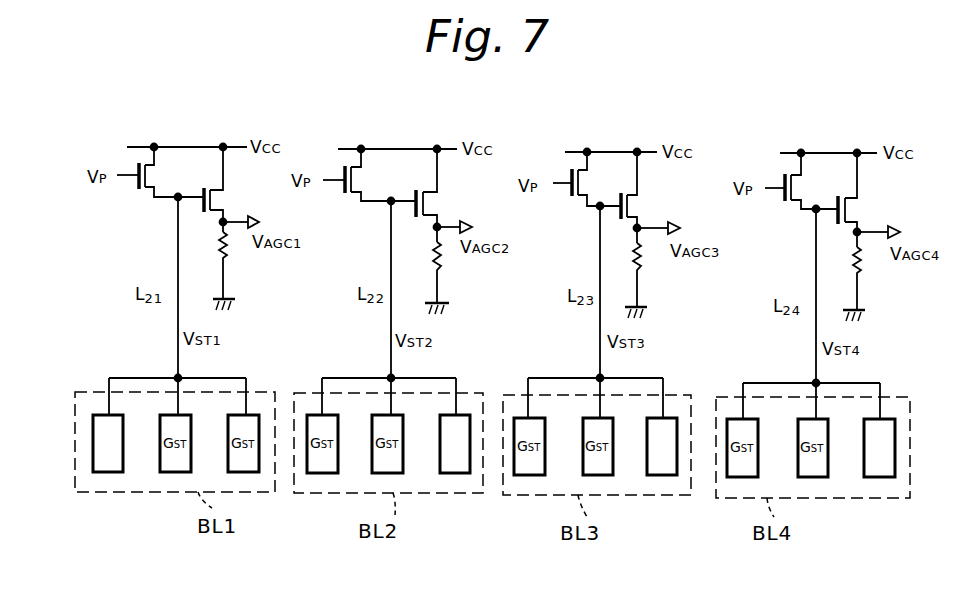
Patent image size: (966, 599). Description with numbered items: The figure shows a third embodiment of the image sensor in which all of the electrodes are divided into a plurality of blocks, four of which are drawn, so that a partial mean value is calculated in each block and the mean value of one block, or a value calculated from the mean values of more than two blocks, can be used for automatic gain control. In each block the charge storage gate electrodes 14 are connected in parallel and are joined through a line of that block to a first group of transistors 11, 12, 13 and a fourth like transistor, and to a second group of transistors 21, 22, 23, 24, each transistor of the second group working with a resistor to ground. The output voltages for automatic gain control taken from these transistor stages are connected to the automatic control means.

The charge storage gate electrodes 14 is at (107, 472).
The transistor Q11 11 is at (160, 172).
The transistor Q12 12 is at (369, 175).
The transistor Q13 13 is at (587, 179).
The transistor Q21 21 is at (231, 189).
The transistor Q22 22 is at (445, 195).
The transistor Q23 23 is at (647, 197).
The transistor Q24 24 is at (866, 200).